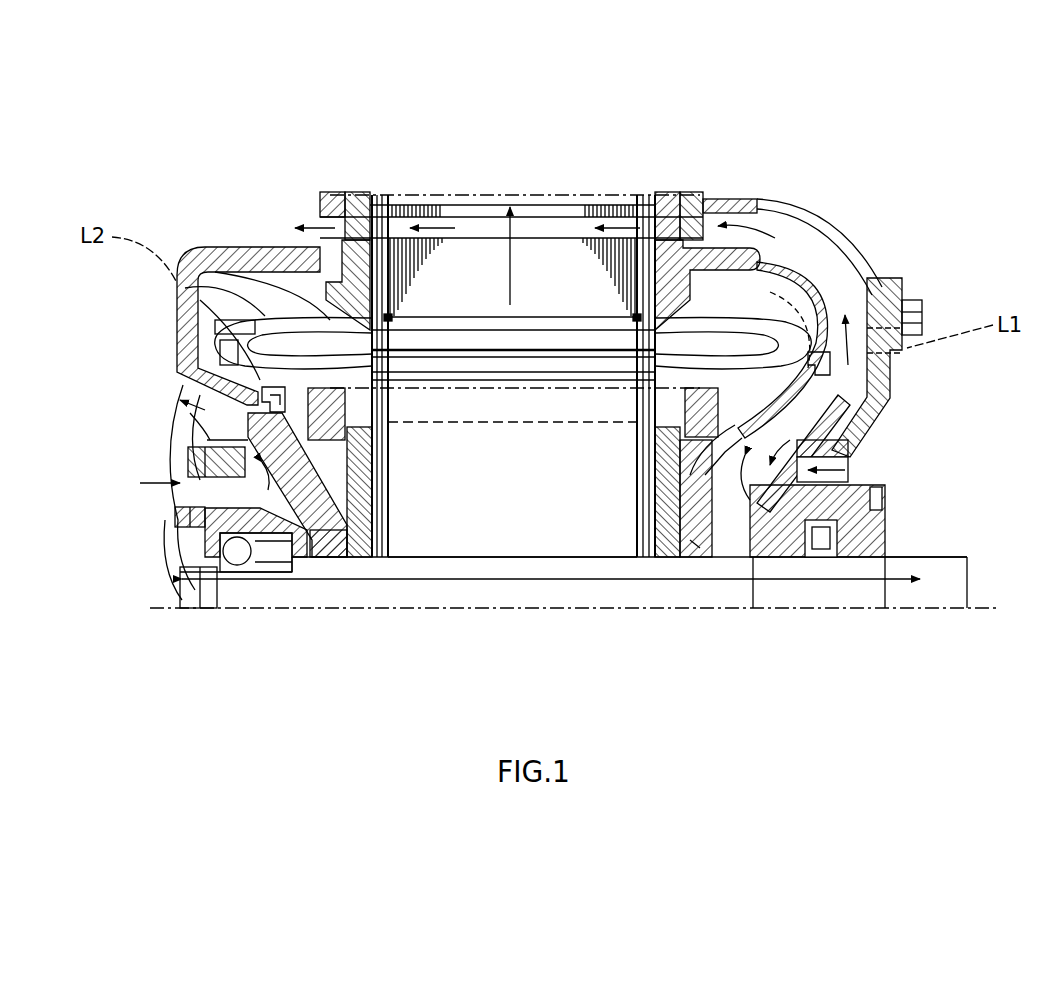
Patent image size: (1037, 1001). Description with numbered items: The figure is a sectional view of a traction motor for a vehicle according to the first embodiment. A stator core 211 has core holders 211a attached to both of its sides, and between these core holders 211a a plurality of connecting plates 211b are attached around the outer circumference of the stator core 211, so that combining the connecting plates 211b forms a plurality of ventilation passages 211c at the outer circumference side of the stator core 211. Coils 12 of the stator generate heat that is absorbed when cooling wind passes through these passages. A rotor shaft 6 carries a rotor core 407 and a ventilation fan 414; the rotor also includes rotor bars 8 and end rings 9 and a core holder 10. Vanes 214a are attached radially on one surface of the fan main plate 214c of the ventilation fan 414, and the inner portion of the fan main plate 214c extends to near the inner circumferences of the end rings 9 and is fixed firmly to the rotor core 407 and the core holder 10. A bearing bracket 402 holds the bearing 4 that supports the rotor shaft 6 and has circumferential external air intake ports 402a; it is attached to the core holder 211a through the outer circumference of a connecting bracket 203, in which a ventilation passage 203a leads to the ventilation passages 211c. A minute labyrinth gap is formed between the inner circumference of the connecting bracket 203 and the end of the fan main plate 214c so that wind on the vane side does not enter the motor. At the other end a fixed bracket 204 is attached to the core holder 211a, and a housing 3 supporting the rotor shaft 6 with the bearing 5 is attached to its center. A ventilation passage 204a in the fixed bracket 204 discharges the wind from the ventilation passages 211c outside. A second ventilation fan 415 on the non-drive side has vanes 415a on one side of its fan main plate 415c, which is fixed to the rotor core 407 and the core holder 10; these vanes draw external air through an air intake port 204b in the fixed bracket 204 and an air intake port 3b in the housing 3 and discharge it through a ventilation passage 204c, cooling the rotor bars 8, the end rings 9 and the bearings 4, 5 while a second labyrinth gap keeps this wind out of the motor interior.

The housing 3 is at (297, 600).
The air intake port 3b is at (170, 600).
The bearing 4 is at (814, 548).
The bearing 5 is at (237, 560).
The rotor shaft 6 is at (665, 592).
The rotor bars 8 is at (345, 410).
The end rings 9 is at (380, 520).
The core holder 10 is at (330, 560).
The coils 12 is at (270, 318).
The connecting bracket 203 is at (830, 238).
The ventilation passage 203a is at (800, 230).
The fixed bracket 204 is at (232, 250).
The ventilation passage 204a is at (306, 247).
The air intake port 204b is at (183, 492).
The ventilation passage 204c is at (178, 388).
The stator core 211 is at (582, 278).
The core holders 211a is at (345, 215).
The connecting plates 211b is at (563, 275).
The ventilation passages 211c is at (425, 230).
The vanes 214a is at (880, 410).
The fan main plate 214c is at (885, 392).
The bearing bracket 402 is at (895, 290).
The external air intake ports 402a is at (862, 462).
The rotor core 407 is at (545, 520).
The ventilation fan 414 is at (695, 550).
The ventilation fan 415 is at (322, 445).
The vanes 415a is at (195, 405).
The fan main plate 415c is at (188, 455).